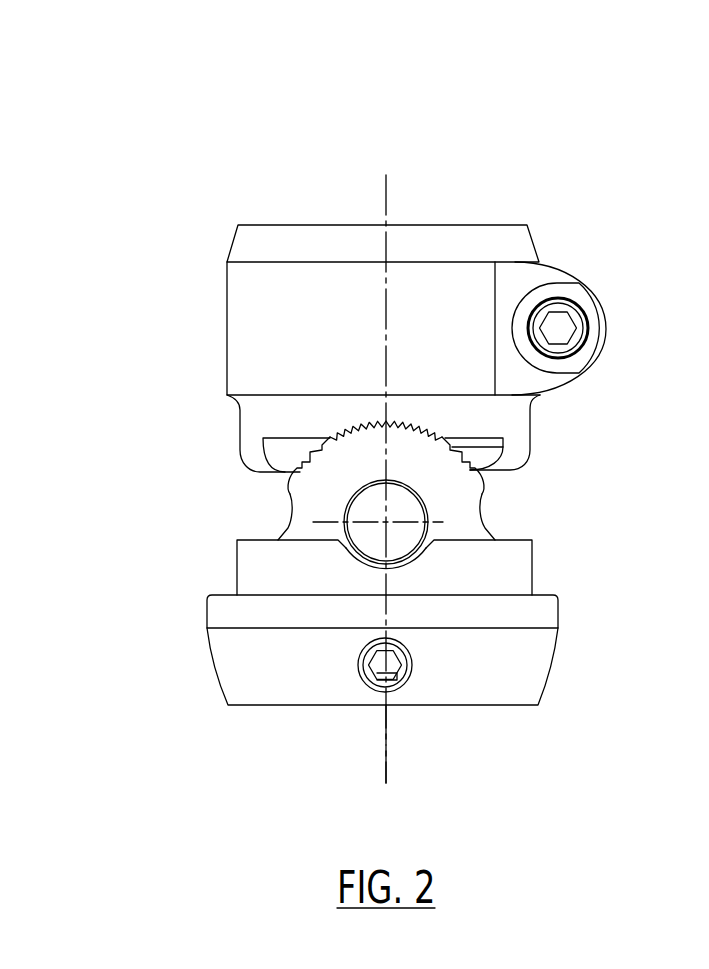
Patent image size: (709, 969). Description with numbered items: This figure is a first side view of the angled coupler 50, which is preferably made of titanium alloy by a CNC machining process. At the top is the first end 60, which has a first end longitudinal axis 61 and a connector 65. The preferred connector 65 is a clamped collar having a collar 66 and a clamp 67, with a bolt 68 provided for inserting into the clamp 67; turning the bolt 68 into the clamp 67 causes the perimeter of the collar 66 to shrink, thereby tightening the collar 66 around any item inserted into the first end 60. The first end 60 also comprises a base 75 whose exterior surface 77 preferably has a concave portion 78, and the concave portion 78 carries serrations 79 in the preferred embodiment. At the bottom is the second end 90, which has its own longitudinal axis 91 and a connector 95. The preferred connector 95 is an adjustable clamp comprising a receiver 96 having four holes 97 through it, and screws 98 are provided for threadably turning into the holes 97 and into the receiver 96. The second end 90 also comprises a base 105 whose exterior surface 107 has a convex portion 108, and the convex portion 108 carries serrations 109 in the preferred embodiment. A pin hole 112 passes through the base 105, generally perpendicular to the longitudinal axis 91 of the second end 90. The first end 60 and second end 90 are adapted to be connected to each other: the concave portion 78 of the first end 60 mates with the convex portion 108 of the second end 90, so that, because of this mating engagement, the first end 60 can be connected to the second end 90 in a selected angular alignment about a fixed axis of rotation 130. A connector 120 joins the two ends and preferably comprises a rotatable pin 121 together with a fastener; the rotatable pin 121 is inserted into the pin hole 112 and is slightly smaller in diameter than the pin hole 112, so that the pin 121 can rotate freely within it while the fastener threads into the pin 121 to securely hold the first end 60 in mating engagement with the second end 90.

The angled coupler 50 is at (263, 159).
The first end 60 is at (214, 260).
The first end longitudinal axis 61 is at (388, 196).
The connector 65 is at (553, 280).
The collar 66 is at (502, 223).
The clamp 67 is at (607, 308).
The bolt 68 is at (578, 334).
The base 75 is at (532, 414).
The exterior surface 77 is at (258, 472).
The concave portion 78 is at (500, 447).
The serrations 79 is at (330, 437).
The base 105 is at (532, 580).
The exterior surface 107 is at (278, 538).
The convex portion 108 is at (478, 497).
The serrations 109 is at (290, 493).
The pin hole 112 is at (427, 531).
The connector 120 is at (384, 522).
The rotatable pin 121 is at (407, 538).
The fixed axis of rotation 130 is at (346, 548).
The second end 90 is at (191, 653).
The longitudinal axis 91 is at (385, 738).
The connector 95 is at (513, 705).
The receiver 96 is at (545, 677).
The holes 97 is at (410, 675).
The screws 98 is at (372, 680).